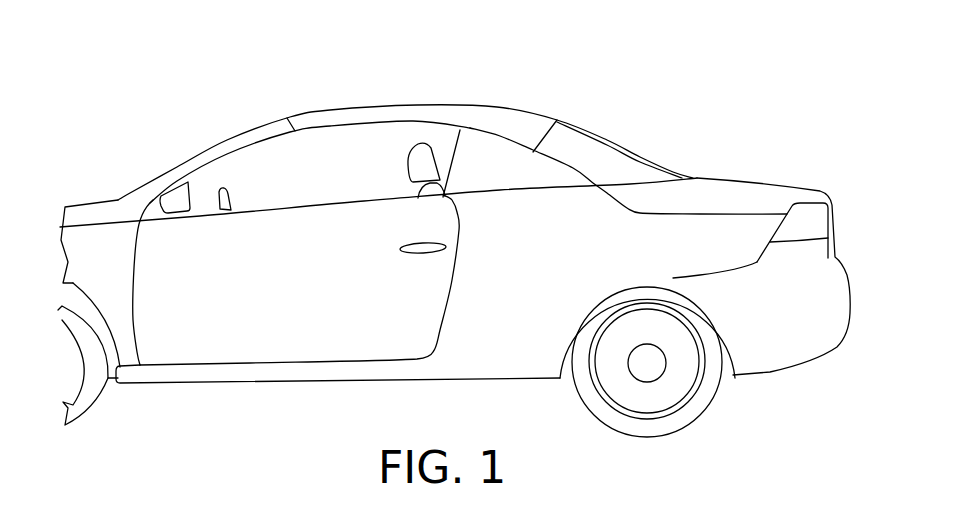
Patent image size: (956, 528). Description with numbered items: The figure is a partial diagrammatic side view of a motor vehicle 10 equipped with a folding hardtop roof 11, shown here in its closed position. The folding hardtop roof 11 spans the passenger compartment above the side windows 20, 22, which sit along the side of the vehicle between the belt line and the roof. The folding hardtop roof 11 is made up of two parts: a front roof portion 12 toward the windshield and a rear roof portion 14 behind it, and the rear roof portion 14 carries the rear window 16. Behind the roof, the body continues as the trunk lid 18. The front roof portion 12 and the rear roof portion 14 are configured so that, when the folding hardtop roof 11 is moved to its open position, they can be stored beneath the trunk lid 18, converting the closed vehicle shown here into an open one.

The motor vehicle 10 is at (143, 112).
The folding hardtop roof 11 is at (400, 87).
The front roof portion 12 is at (438, 112).
The rear roof portion 14 is at (570, 145).
The rear window 16 is at (630, 142).
The trunk lid 18 is at (747, 188).
The side window 20 is at (331, 168).
The side window 22 is at (488, 155).